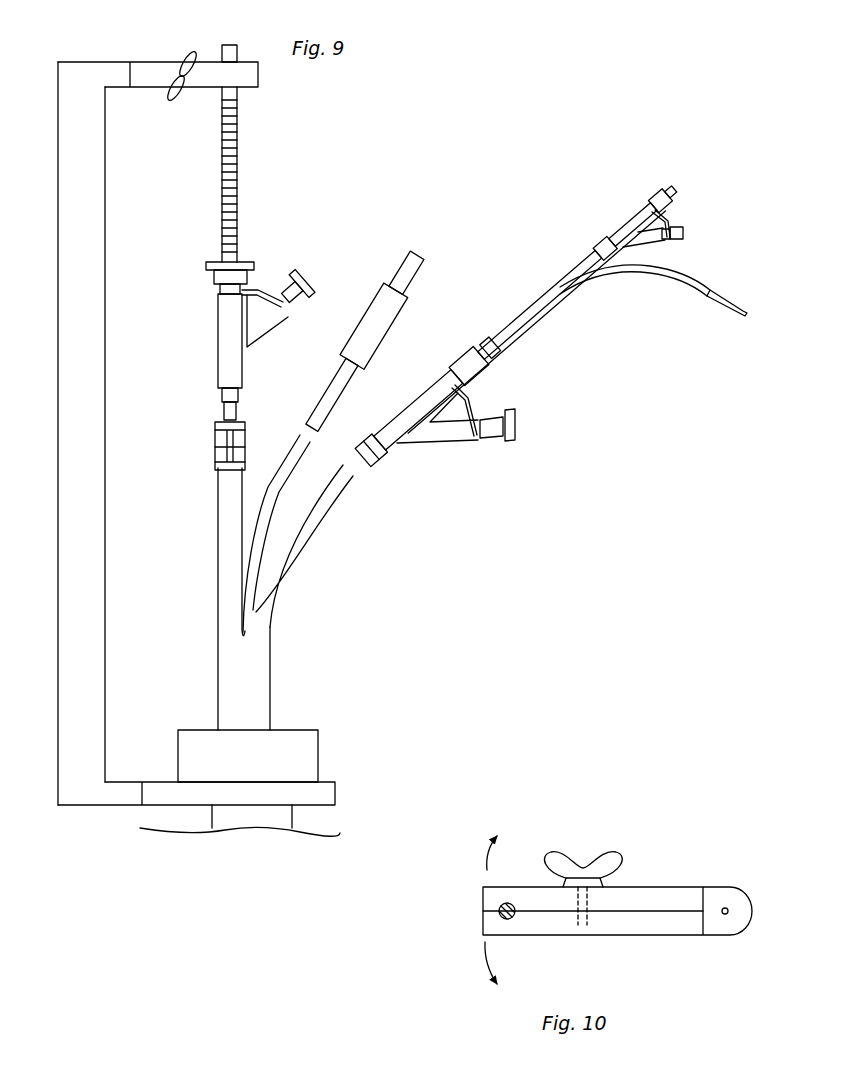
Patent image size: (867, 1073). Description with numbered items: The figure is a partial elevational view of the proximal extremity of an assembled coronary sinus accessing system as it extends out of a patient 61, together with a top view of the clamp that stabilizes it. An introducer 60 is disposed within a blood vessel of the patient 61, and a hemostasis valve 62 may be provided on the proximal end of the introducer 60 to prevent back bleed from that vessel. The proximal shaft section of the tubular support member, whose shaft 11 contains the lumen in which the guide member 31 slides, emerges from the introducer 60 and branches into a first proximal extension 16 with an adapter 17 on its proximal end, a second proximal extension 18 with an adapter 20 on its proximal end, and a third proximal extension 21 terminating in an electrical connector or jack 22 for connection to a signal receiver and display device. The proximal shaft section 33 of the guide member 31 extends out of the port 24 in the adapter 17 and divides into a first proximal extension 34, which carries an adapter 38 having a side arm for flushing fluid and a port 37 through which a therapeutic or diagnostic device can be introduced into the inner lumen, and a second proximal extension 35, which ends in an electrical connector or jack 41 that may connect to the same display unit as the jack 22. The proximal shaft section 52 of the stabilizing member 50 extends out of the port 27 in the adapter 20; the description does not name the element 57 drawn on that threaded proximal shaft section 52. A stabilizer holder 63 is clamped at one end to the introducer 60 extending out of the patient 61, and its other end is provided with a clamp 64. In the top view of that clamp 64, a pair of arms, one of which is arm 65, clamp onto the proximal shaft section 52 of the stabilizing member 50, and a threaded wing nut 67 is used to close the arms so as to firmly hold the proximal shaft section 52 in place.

In FIG. 9, the shaft 11 is at (224, 692).
In FIG. 9, the first proximal extension 16 is at (350, 478).
In FIG. 10, the first proximal extension 16 is at (665, 930).
In FIG. 9, the adapter 17 is at (408, 427).
In FIG. 9, the second proximal extension 18 is at (218, 563).
In FIG. 9, the adapter 20 is at (220, 343).
In FIG. 9, the third proximal extension 21 is at (336, 390).
In FIG. 9, the electrical connector or jack 22 is at (413, 283).
In FIG. 9, the port 24 is at (500, 348).
In FIG. 9, the port 27 is at (247, 262).
In FIG. 9, the guide member 31 is at (523, 313).
In FIG. 9, the proximal shaft section 33 is at (583, 257).
In FIG. 9, the first proximal extension 34 is at (522, 322).
In FIG. 9, the second proximal extension 35 is at (660, 278).
In FIG. 9, the port 37 is at (672, 187).
In FIG. 9, the adapter 38 is at (627, 222).
In FIG. 9, the electrical connector or jack 41 is at (747, 310).
In FIG. 10, the stabilizing member 50 is at (507, 903).
In FIG. 9, the proximal shaft section 52 is at (240, 165).
In FIG. 9, the threads 57 is at (237, 240).
In FIG. 9, the introducer 60 is at (225, 825).
In FIG. 9, the patient 61 is at (333, 832).
In FIG. 9, the hemostasis valve 62 is at (285, 742).
In FIG. 9, the stabilizer holder 63 is at (58, 400).
In FIG. 9, the clamp 64 is at (160, 62).
In FIG. 10, the clamp 64 is at (545, 935).
In FIG. 10, the arm 65 is at (650, 892).
In FIG. 9, the threaded wing nut 67 is at (176, 95).
In FIG. 10, the threaded wing nut 67 is at (582, 870).